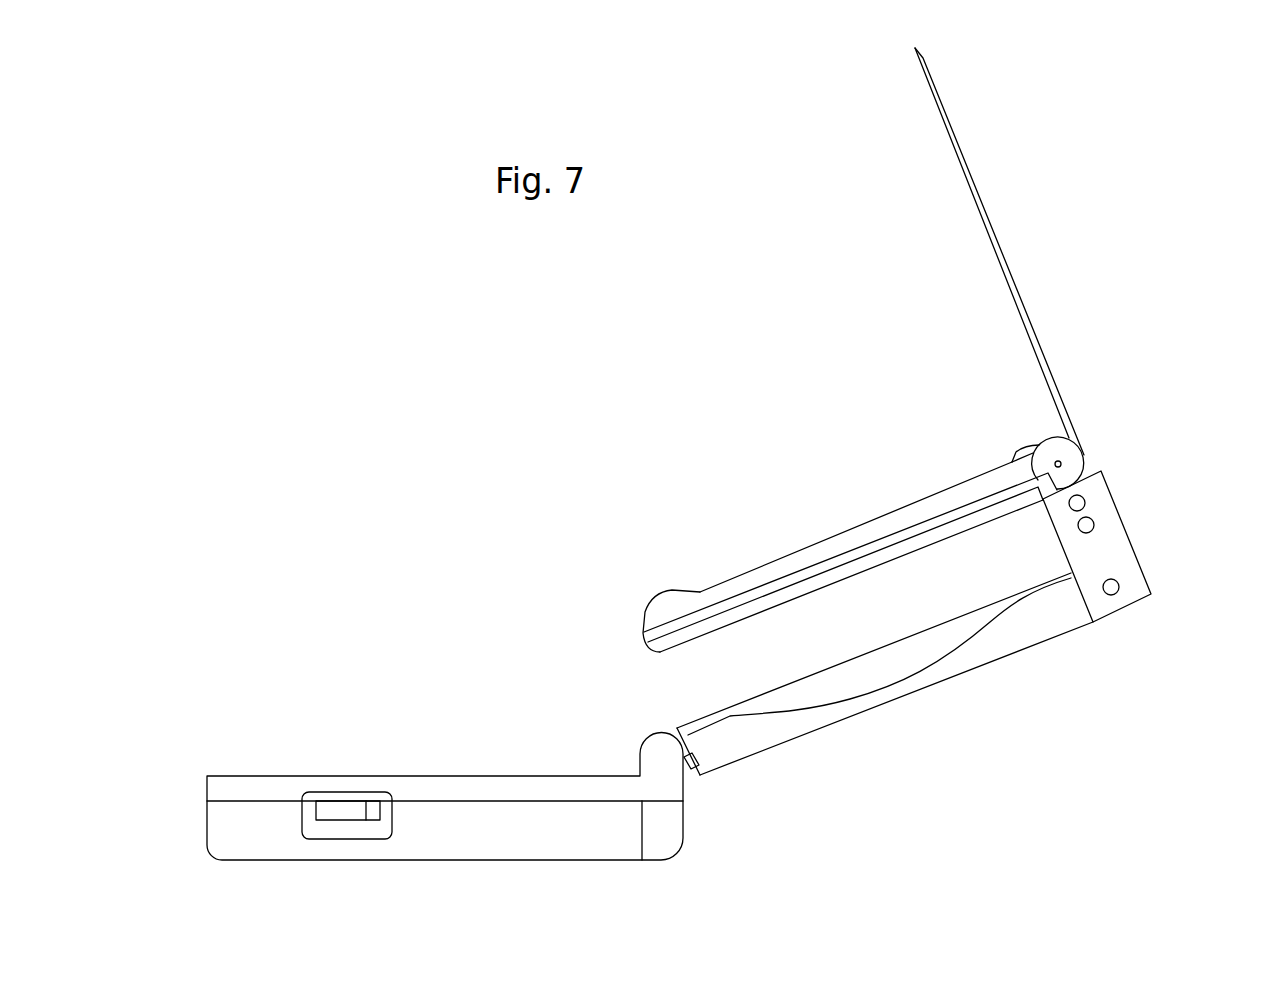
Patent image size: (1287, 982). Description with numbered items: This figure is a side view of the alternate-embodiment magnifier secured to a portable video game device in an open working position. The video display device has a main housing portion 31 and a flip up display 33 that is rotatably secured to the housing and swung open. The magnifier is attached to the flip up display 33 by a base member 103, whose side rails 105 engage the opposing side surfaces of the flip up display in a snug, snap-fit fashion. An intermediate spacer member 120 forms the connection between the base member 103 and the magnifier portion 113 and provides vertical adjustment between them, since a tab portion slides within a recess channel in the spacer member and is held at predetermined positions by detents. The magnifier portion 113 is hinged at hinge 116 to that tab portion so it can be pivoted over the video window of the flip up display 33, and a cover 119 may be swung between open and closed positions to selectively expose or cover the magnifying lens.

The main housing portion 31 is at (215, 816).
The flip up display 33 is at (772, 690).
The base member 103 is at (967, 635).
The side rails 105 is at (727, 740).
The magnifier portion 113 is at (642, 613).
The hinge 116 is at (1061, 464).
The cover 119 is at (971, 173).
The intermediate spacer member 120 is at (1116, 505).